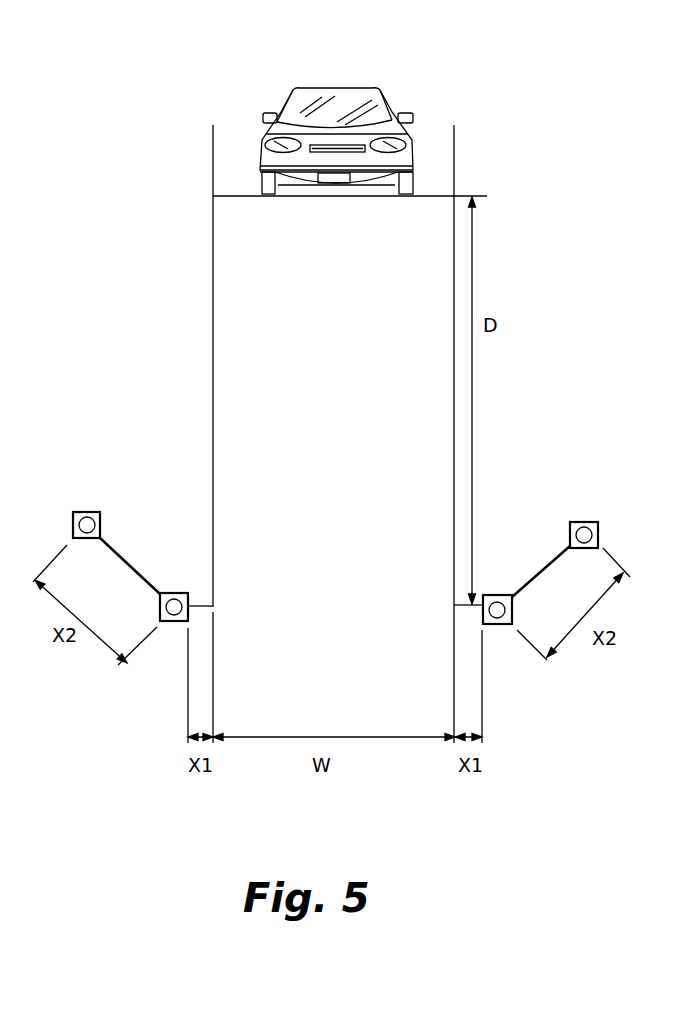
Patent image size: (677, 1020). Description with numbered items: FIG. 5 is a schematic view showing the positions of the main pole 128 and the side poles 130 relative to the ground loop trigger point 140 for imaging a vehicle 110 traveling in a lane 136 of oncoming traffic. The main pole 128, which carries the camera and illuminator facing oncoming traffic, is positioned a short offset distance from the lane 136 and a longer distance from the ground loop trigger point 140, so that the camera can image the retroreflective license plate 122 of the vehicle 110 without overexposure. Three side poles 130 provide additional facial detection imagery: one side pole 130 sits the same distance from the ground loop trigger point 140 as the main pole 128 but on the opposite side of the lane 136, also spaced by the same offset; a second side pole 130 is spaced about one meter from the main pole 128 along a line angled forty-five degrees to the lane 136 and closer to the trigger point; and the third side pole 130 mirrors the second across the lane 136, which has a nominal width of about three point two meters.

The vehicle 110 is at (349, 77).
The license plate 122 is at (340, 179).
The main pole 128 is at (497, 632).
The side poles 130 is at (63, 505).
The lane 136 is at (349, 413).
The ground loop trigger point 140 is at (455, 195).